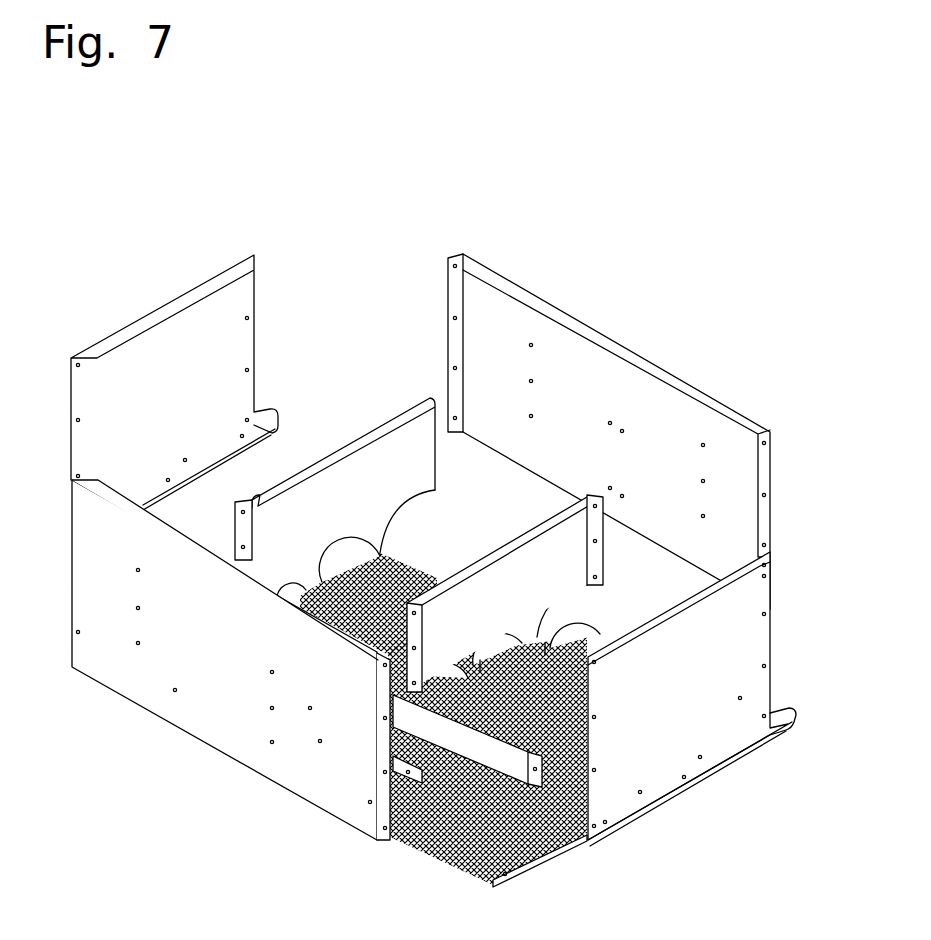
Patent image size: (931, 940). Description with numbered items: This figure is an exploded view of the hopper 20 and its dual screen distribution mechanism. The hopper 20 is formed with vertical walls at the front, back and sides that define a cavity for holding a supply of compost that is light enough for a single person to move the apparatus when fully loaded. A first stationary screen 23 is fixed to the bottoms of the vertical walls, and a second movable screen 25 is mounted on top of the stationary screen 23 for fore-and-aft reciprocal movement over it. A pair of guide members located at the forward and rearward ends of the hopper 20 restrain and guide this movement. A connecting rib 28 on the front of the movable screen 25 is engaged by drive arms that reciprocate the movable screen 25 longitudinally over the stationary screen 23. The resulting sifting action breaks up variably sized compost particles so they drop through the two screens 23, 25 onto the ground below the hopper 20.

The hopper 20 is at (520, 211).
The first stationary screen member 23 is at (433, 857).
The second movable screen 25 is at (590, 755).
The connecting rib 28 is at (578, 640).